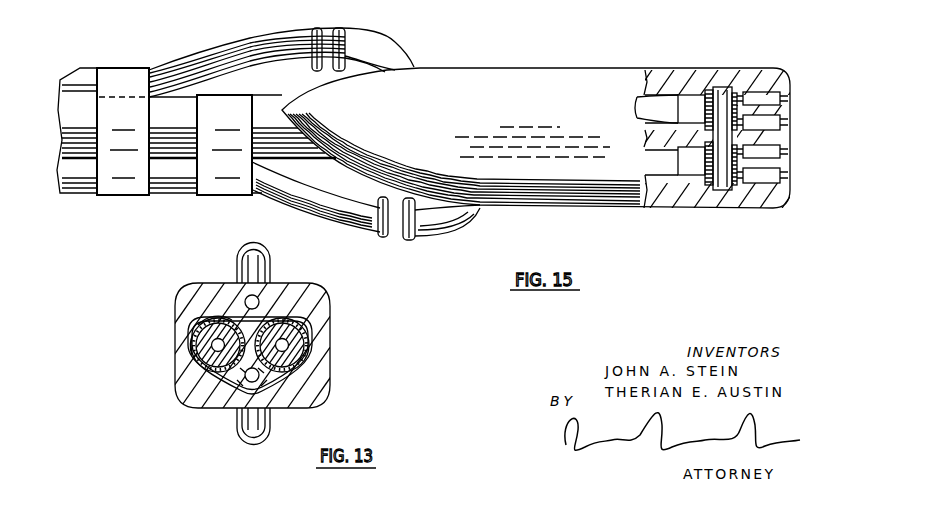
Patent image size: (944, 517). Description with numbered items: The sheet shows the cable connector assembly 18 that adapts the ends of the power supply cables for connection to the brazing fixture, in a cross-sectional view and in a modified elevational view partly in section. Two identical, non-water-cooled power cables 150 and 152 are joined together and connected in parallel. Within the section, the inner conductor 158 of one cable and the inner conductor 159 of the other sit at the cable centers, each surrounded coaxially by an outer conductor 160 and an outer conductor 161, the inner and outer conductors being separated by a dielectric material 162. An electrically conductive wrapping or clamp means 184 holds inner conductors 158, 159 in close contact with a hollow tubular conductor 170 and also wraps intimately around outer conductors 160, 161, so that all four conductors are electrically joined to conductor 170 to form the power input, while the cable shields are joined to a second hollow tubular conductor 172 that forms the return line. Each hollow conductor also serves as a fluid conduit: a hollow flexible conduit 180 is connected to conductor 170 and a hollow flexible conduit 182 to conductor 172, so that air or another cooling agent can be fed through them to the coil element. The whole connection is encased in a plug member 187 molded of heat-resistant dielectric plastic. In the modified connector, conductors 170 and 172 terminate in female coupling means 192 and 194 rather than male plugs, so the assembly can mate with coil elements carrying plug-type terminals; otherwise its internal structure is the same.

In FIG. 15, the cable assembly 18 is at (80, 67).
In FIG. 13, the cable assembly 18 is at (160, 287).
In FIG. 15, the power supply cable 152 is at (178, 147).
In FIG. 13, the power supply cable 152 is at (188, 365).
In FIG. 15, the hollow flexible conduit 182 is at (245, 52).
In FIG. 15, the hollow flexible conduit 180 is at (278, 190).
In FIG. 15, the hollow tubular conductor 172 is at (386, 52).
In FIG. 13, the hollow tubular conductor 172 is at (257, 302).
In FIG. 15, the hollow tubular conductor 170 is at (462, 222).
In FIG. 13, the hollow tubular conductor 170 is at (260, 378).
In FIG. 15, the plug member 187 is at (608, 78).
In FIG. 13, the plug member 187 is at (298, 295).
In FIG. 15, the female coupling means 194 is at (790, 100).
In FIG. 15, the female coupling means 192 is at (788, 183).
In FIG. 13, the outer conductor 160 is at (208, 322).
In FIG. 13, the dielectric material 162 is at (205, 324).
In FIG. 13, the inner conductor 158 is at (207, 337).
In FIG. 13, the power supply cable 150 is at (295, 335).
In FIG. 13, the inner conductor 159 is at (292, 348).
In FIG. 13, the outer conductor 161 is at (300, 318).
In FIG. 13, the electrically conductive wrapping or clamp means 184 is at (293, 367).